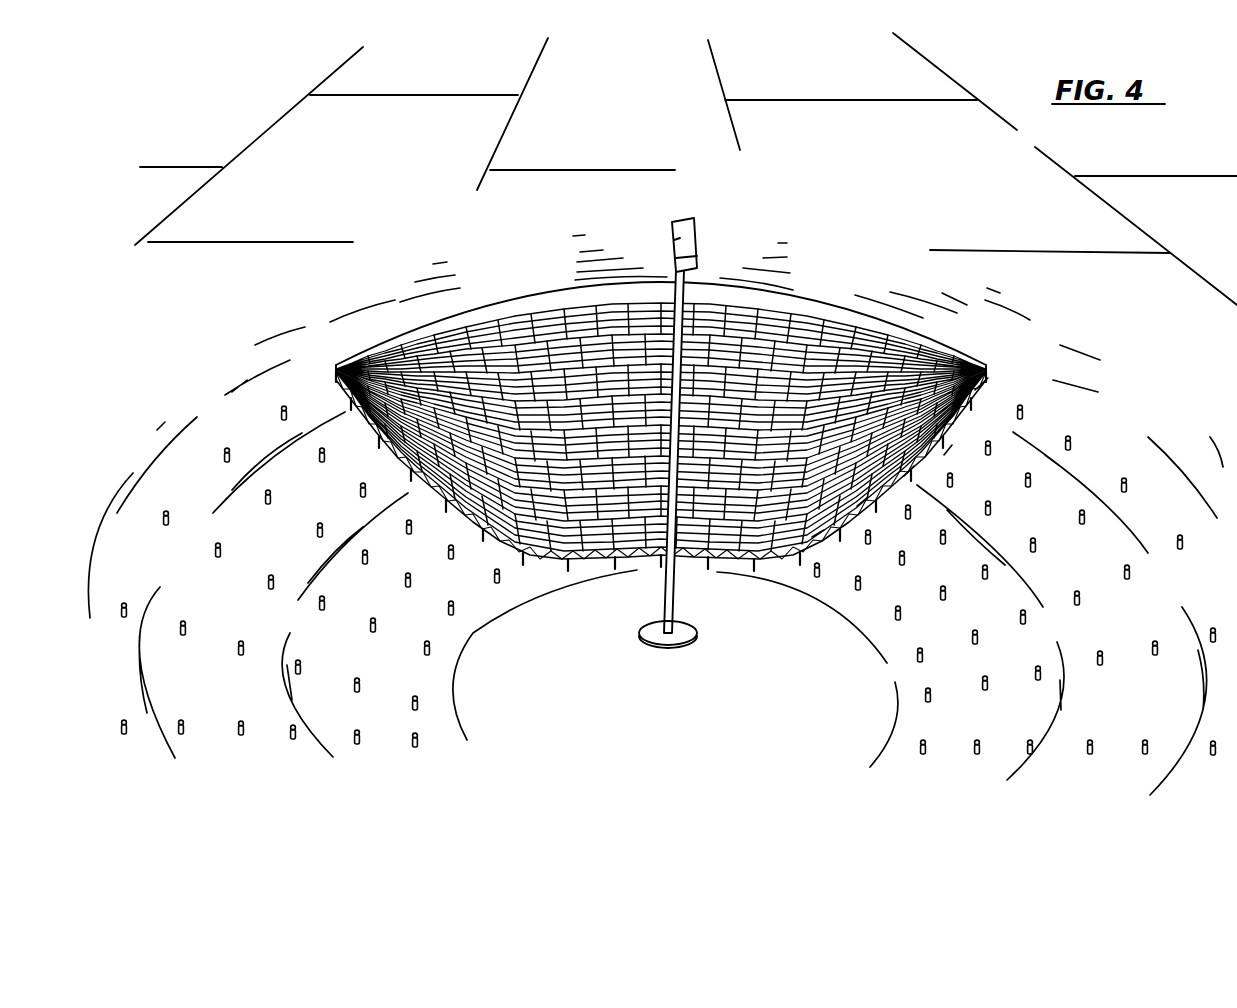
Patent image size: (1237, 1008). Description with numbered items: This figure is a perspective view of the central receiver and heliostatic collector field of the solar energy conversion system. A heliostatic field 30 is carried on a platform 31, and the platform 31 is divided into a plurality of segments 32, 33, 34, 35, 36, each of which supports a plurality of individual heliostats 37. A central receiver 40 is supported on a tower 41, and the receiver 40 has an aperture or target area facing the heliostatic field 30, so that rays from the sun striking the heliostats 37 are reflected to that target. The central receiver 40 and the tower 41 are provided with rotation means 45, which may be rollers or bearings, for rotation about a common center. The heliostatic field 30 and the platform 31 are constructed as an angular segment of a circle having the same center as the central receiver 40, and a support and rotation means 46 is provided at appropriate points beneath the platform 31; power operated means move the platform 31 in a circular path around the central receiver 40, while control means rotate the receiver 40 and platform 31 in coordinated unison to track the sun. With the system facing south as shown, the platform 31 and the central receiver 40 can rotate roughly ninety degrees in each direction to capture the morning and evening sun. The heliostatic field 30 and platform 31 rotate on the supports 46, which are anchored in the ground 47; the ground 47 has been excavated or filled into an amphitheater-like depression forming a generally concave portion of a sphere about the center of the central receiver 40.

The heliostatic field 30 is at (812, 322).
The platform 31 is at (506, 533).
The segment 32 is at (812, 537).
The segment 33 is at (857, 506).
The segment 34 is at (904, 476).
The segment 35 is at (944, 455).
The segment 36 is at (975, 396).
The heliostat 37 is at (515, 305).
The central receiver 40 is at (693, 232).
The tower 41 is at (676, 588).
The rotation means 45 is at (692, 644).
The support and rotation means 46 is at (408, 576).
The ground 47 is at (417, 682).